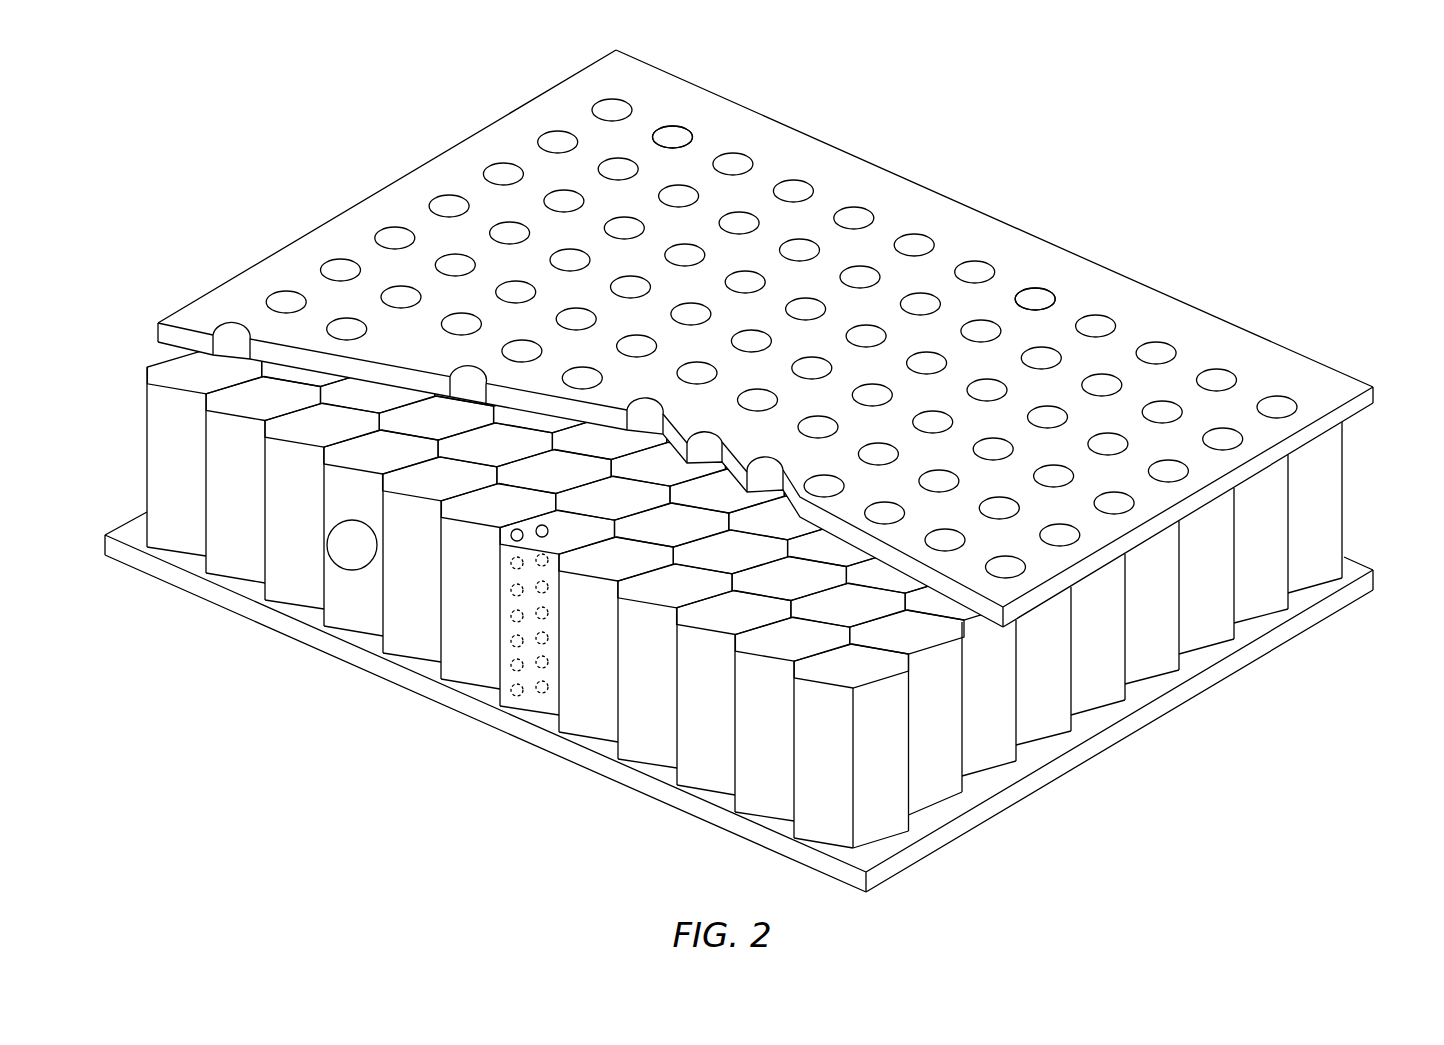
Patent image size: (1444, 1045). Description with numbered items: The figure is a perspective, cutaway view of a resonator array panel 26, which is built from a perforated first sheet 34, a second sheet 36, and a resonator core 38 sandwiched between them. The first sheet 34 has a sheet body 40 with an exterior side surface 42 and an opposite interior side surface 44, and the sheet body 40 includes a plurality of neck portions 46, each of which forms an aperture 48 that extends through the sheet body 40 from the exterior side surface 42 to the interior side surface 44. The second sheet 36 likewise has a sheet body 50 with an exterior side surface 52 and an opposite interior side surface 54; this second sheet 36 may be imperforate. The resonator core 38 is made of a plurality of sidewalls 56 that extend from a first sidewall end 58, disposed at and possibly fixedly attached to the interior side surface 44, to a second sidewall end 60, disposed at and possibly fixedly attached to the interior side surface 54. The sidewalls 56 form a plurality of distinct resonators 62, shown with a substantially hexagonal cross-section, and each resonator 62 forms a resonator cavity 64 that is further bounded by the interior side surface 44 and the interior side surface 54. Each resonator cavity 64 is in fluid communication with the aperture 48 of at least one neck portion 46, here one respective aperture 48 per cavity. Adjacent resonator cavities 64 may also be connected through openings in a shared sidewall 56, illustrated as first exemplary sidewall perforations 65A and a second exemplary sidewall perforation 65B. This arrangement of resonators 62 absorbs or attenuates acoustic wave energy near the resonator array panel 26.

The resonator array panel 26 is at (1248, 214).
The perforated first sheet 34 is at (965, 243).
The second sheet 36 is at (1047, 779).
The resonator core 38 is at (707, 716).
The sheet body 40 is at (1325, 422).
The exterior side surface 42 is at (1152, 315).
The interior side surface 44 is at (1306, 447).
The neck portion 46 is at (694, 121).
The aperture 48 is at (676, 126).
The sheet body 50 is at (975, 820).
The exterior side surface 52 is at (1205, 678).
The interior side surface 54 is at (1300, 607).
The sidewall 56 is at (470, 627).
The first sidewall end 58 is at (163, 352).
The second sidewall end 60 is at (183, 557).
The resonator 62 is at (291, 401).
The resonator cavity 64 is at (467, 462).
The first exemplary sidewall perforations 65A is at (545, 624).
The second exemplary sidewall perforation 65B is at (352, 545).